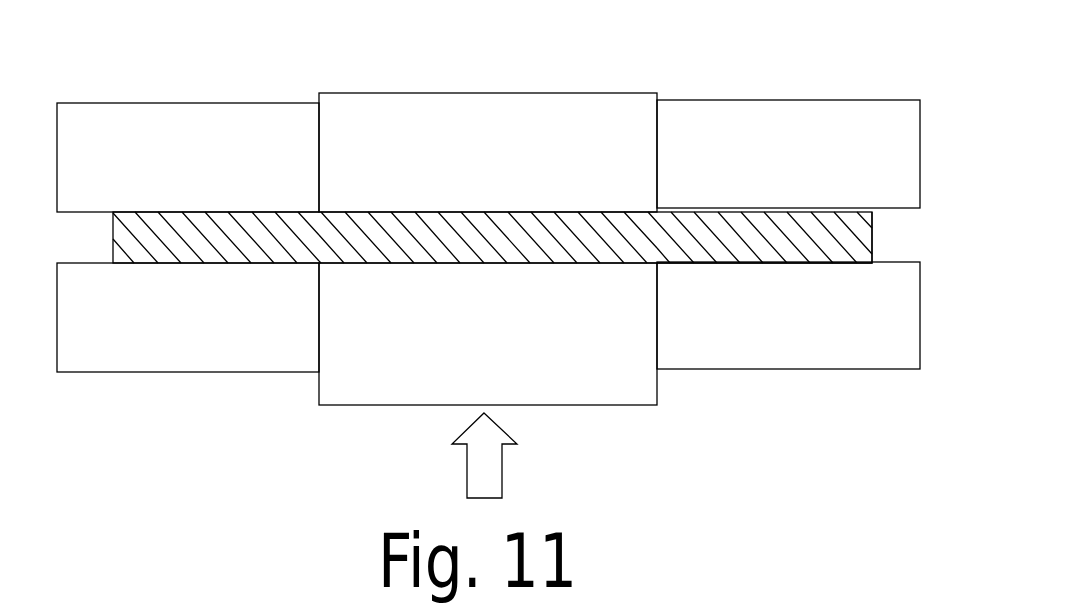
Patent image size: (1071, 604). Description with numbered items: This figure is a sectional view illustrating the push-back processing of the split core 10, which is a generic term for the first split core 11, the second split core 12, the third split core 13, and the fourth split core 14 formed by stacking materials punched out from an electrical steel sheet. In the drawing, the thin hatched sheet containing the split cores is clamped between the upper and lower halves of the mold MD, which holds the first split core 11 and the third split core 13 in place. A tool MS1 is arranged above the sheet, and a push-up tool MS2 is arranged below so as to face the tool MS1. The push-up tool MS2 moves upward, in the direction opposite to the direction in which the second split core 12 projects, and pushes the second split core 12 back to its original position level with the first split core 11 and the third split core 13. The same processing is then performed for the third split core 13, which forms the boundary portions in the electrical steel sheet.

The split core 10 is at (492, 237).
The first split core 11 is at (197, 235).
The second split core 12 is at (368, 250).
The third split core 13 is at (772, 232).
The fourth split core 14 is at (764, 237).
The tool MS1 is at (356, 170).
The push-up tool MS2 is at (638, 322).
The mold MD is at (187, 322).